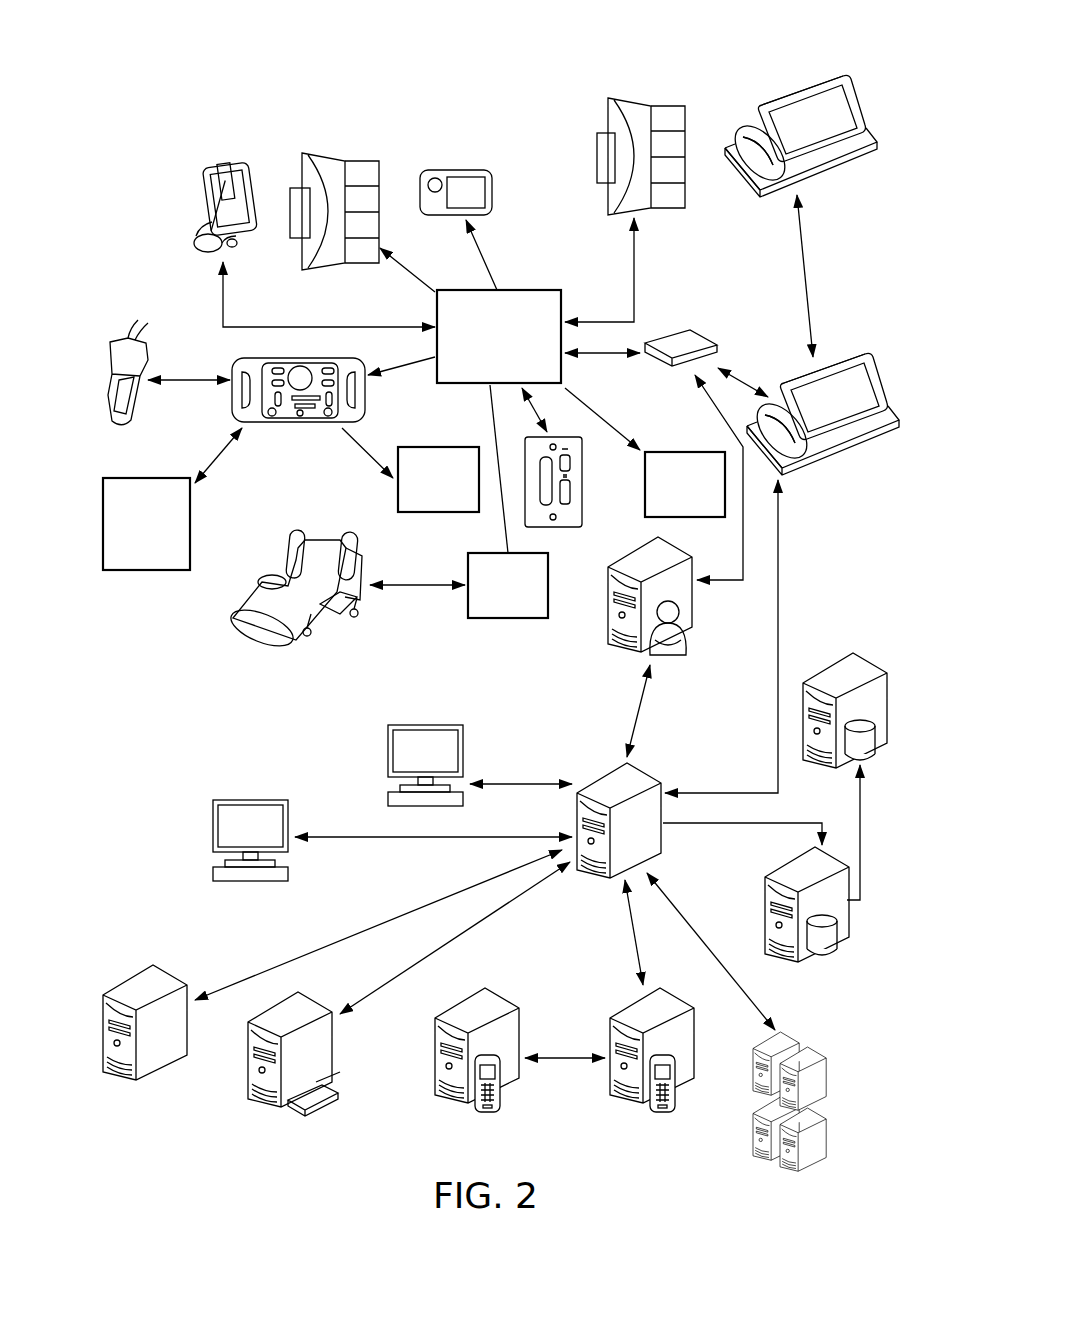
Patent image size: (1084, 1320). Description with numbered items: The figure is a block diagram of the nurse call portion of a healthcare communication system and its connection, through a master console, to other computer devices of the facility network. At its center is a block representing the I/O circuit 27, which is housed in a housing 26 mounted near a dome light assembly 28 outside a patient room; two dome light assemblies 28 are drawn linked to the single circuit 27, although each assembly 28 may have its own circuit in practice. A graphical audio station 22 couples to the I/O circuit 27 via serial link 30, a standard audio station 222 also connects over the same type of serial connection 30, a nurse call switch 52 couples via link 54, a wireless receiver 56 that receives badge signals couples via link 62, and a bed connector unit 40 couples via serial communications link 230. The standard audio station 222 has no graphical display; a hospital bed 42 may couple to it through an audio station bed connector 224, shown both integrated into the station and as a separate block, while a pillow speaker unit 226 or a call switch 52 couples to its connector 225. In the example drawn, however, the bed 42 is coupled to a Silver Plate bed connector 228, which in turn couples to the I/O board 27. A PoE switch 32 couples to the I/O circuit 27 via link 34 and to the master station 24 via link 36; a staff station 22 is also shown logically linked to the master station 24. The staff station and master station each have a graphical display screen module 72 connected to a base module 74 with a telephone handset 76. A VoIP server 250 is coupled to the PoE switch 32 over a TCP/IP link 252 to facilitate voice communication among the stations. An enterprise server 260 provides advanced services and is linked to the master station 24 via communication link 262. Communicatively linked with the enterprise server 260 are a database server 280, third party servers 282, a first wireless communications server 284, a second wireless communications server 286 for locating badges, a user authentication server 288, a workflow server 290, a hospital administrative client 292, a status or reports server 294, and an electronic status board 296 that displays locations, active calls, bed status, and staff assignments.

The graphical audio station 22 is at (442, 158).
The master station 24 is at (832, 350).
The housing 26 is at (292, 192).
The I/O circuit 27 is at (514, 347).
The dome light assembly 28 is at (322, 145).
The RS-485 connection 30 is at (483, 252).
The PoE switch 32 is at (692, 333).
The link 34 is at (610, 352).
The link 36 is at (742, 376).
The bed connector unit 40 is at (565, 530).
The hospital bed 42 is at (238, 595).
The nurse call switch 52 is at (190, 197).
The link 54 is at (346, 327).
The wireless receiver 56 is at (640, 490).
The link 62 is at (602, 430).
The graphical display screen module 72 is at (848, 100).
The base module 74 is at (852, 143).
The telephone handset 76 is at (780, 163).
The standard audio station 222 is at (220, 352).
The audio station bed connector 224 is at (233, 397).
The connector 225 is at (274, 392).
The pillow speaker unit 226 is at (120, 345).
The Silver Plate bed connector 228 is at (512, 620).
The RS-485 communications link 230 is at (552, 394).
The VoIP server 250 is at (640, 552).
The TCP/IP communications link 252 is at (727, 583).
The enterprise server 260 is at (610, 778).
The communication link 262 is at (780, 570).
The database server 280 is at (848, 912).
The third party server 282 is at (792, 1032).
The first wireless communications server 284 is at (668, 1000).
The second wireless communications server 286 is at (492, 1000).
The user authentication server 288 is at (312, 1003).
The workflow server 290 is at (165, 978).
The hospital administrative client 292 is at (248, 813).
The status or reports server 294 is at (862, 662).
The electronic status board 296 is at (422, 740).